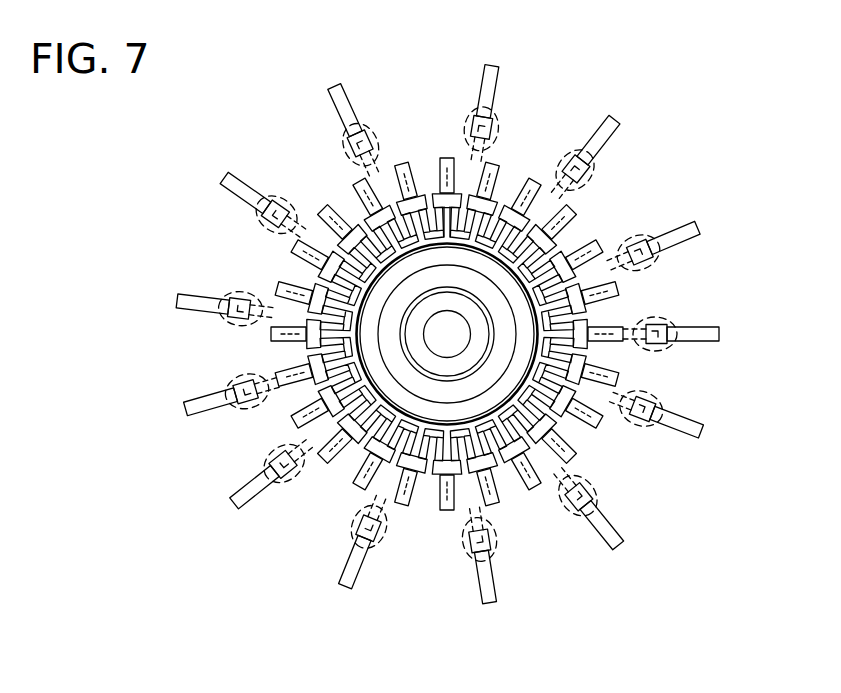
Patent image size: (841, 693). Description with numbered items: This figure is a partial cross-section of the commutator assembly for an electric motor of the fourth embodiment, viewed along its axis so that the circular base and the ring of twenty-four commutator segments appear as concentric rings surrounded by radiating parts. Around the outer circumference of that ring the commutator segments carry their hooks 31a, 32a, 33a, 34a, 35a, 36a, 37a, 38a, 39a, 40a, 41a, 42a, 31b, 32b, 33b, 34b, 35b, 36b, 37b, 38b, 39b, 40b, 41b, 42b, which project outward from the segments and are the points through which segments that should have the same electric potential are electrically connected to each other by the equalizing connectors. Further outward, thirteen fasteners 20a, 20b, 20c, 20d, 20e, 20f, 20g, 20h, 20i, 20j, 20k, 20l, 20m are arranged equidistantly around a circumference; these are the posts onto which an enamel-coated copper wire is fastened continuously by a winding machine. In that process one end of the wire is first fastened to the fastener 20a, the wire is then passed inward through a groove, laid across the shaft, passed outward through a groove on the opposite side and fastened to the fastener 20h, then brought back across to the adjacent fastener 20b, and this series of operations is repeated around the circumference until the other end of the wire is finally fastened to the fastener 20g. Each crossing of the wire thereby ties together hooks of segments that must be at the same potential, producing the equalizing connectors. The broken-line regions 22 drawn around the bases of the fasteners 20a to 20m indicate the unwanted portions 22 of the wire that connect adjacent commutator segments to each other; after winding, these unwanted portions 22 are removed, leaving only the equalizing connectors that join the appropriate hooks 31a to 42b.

The fastener 20a is at (186, 412).
The fastener 20b is at (236, 503).
The fastener 20c is at (349, 588).
The fastener 20d is at (488, 606).
The fastener 20e is at (620, 546).
The fastener 20f is at (702, 432).
The fastener 20g is at (721, 333).
The fastener 20h is at (704, 228).
The fastener 20i is at (615, 116).
The fastener 20j is at (493, 68).
The fastener 20k is at (340, 88).
The fastener 20l is at (224, 176).
The fastener 20m is at (177, 305).
The unwanted portion 22 is at (262, 224).
The hook 31a is at (278, 382).
The hook 32a is at (293, 425).
The hook 33a is at (322, 460).
The hook 34a is at (358, 488).
The hook 35a is at (402, 504).
The hook 36a is at (447, 512).
The hook 37a is at (492, 504).
The hook 38a is at (535, 488).
The hook 39a is at (574, 462).
The hook 40a is at (600, 423).
The hook 41a is at (620, 379).
The hook 42a is at (625, 331).
The hook 31b is at (620, 287).
The hook 32b is at (602, 247).
The hook 33b is at (575, 212).
The hook 34b is at (538, 185).
The hook 35b is at (494, 162).
The hook 36b is at (447, 156).
The hook 37b is at (401, 162).
The hook 38b is at (360, 180).
The hook 39b is at (323, 210).
The hook 40b is at (294, 248).
The hook 41b is at (278, 288).
The hook 42b is at (272, 338).